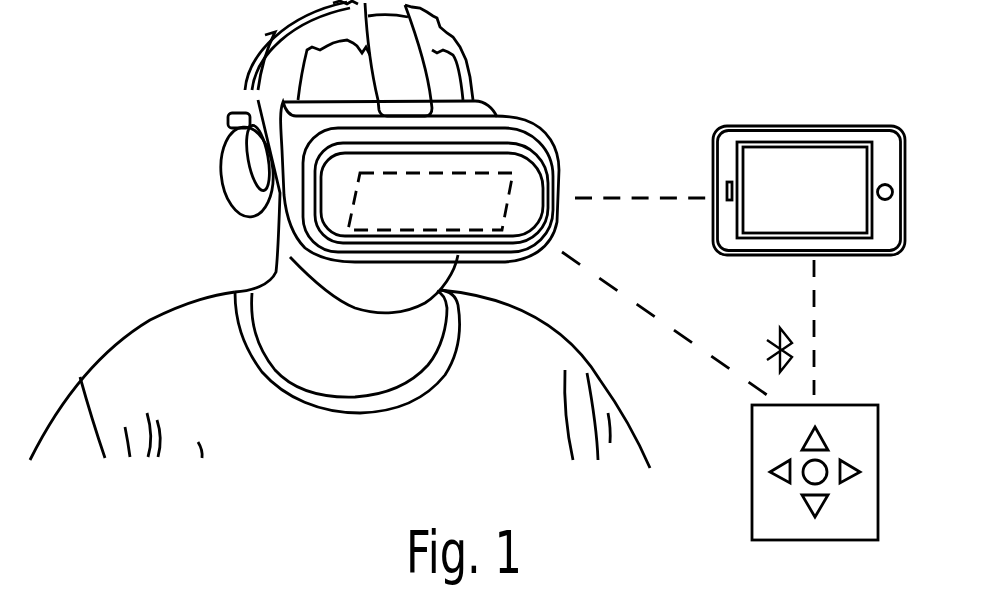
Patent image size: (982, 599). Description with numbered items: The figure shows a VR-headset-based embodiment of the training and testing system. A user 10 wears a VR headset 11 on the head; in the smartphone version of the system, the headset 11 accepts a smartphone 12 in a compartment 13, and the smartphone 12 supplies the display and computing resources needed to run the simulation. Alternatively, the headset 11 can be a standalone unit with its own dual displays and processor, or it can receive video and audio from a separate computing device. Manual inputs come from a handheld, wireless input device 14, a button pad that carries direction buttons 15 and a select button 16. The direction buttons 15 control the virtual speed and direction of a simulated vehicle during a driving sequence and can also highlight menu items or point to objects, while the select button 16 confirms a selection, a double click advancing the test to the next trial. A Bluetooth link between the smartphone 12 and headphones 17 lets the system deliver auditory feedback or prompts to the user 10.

The user 10 is at (120, 330).
The VR headset 11 is at (558, 150).
The smartphone 12 is at (790, 128).
The compartment 13 is at (488, 230).
The wireless input device 14 is at (781, 450).
The direction buttons 15 is at (808, 508).
The select button 16 is at (822, 482).
The headphones 17 is at (212, 165).